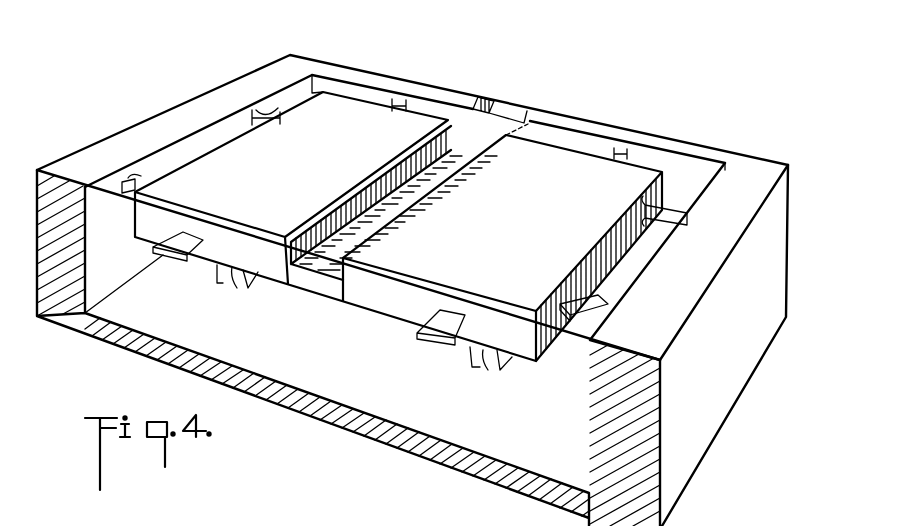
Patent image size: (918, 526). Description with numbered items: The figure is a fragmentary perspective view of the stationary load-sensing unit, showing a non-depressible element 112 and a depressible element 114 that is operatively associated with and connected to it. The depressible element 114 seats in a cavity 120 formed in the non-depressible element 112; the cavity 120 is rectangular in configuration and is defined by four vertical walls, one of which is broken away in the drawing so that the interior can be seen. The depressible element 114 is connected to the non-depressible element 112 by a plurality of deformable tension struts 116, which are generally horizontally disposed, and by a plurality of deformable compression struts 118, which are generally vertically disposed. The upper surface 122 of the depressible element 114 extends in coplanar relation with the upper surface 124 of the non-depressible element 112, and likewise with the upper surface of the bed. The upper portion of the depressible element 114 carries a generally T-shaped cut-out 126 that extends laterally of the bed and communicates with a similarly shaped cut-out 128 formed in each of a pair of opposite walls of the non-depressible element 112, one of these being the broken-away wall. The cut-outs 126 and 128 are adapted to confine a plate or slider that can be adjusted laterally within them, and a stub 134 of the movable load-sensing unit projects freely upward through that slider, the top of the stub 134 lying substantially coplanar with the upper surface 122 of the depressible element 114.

The non-depressible element 112 is at (758, 273).
The depressible element 114 is at (350, 112).
The deformable tension struts 116 is at (390, 112).
The deformable compression struts 118 is at (248, 288).
The cavity 120 is at (612, 416).
The upper surface of the depressible element 122 is at (293, 190).
The upper surface of the non-depressible element 124 is at (697, 281).
The T-shaped cut-out 126 is at (418, 187).
The cut-out 128 is at (528, 115).
The stub 134 is at (203, 518).